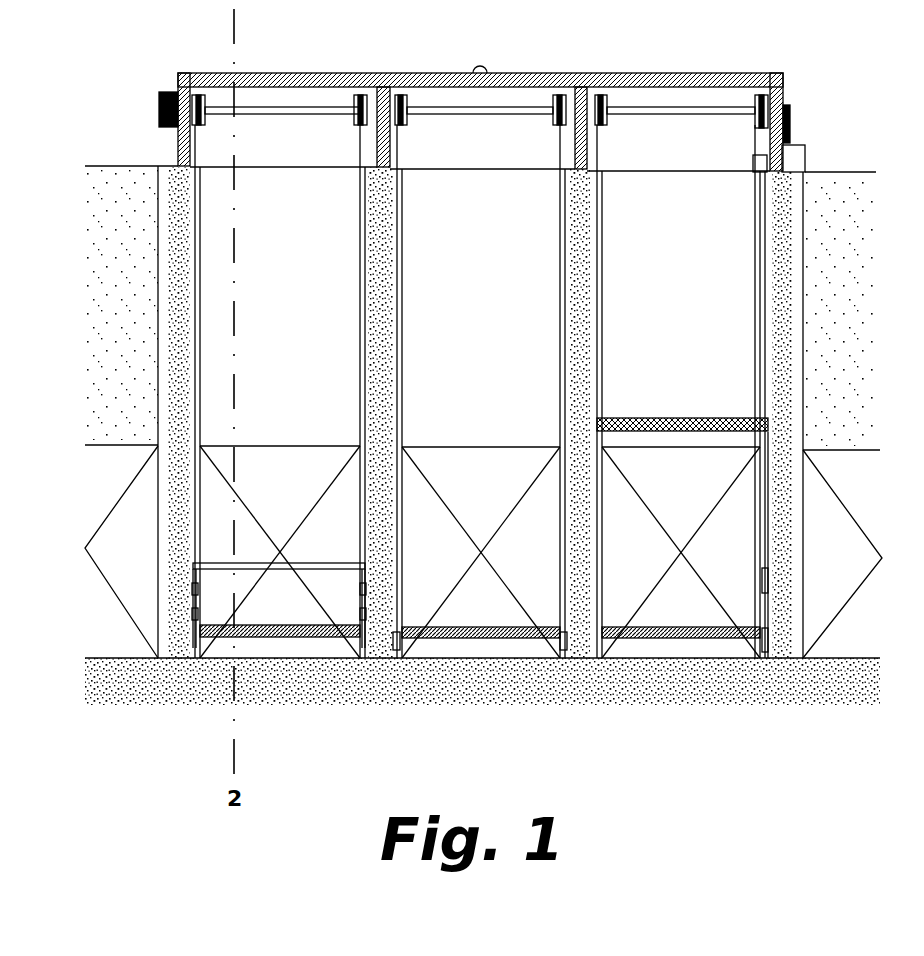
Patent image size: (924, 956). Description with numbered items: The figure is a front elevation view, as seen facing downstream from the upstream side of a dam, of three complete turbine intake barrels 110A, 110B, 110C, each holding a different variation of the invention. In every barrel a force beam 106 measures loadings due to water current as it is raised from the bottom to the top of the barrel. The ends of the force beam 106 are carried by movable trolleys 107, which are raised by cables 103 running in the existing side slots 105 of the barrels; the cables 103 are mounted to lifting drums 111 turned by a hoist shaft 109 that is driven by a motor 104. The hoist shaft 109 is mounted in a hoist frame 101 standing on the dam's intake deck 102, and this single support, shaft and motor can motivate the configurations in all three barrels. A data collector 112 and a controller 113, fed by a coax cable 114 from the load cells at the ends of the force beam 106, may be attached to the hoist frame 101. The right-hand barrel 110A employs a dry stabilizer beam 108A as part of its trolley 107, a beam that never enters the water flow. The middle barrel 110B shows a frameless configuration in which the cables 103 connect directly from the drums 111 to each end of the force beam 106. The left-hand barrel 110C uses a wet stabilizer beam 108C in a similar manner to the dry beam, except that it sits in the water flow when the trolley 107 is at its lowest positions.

The hoist frame 101 is at (524, 71).
The intake deck 102 is at (862, 168).
The cables 103 is at (360, 303).
The motor 104 is at (157, 110).
The side slots 105 is at (558, 507).
The force beam 106 is at (319, 622).
The trolley 107 is at (200, 600).
The dry stabilizer beam 108A is at (708, 417).
The wet stabilizer beam 108C is at (336, 560).
The hoist shaft 109 is at (277, 117).
The intake barrel 110A is at (740, 515).
The intake barrel 110B is at (473, 468).
The intake barrel 110C is at (288, 463).
The drums 111 is at (208, 118).
The data collector 112 is at (794, 108).
The controller 113 is at (809, 150).
The coax cable 114 is at (750, 167).